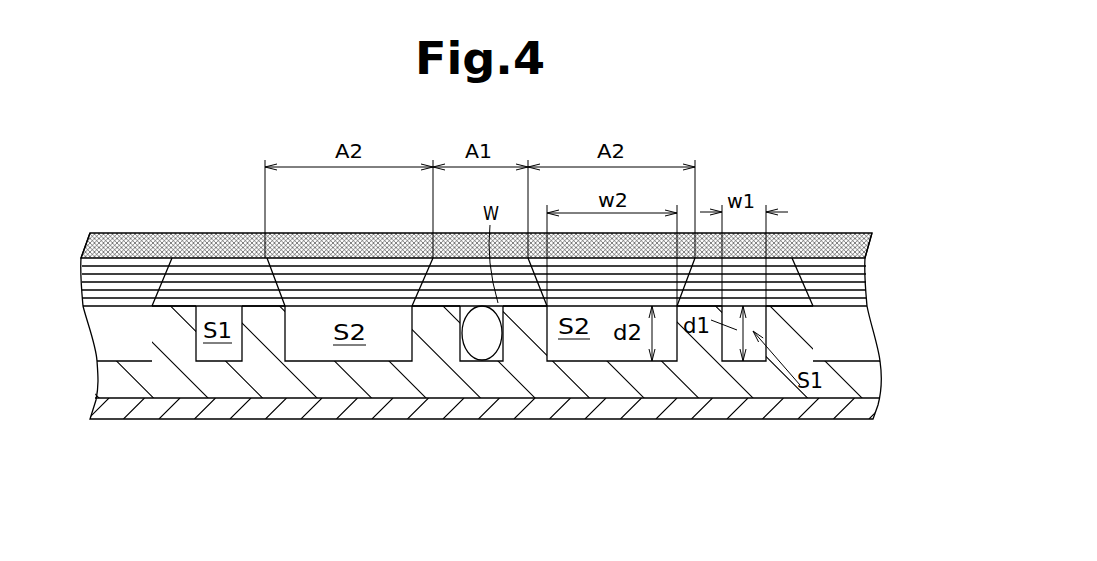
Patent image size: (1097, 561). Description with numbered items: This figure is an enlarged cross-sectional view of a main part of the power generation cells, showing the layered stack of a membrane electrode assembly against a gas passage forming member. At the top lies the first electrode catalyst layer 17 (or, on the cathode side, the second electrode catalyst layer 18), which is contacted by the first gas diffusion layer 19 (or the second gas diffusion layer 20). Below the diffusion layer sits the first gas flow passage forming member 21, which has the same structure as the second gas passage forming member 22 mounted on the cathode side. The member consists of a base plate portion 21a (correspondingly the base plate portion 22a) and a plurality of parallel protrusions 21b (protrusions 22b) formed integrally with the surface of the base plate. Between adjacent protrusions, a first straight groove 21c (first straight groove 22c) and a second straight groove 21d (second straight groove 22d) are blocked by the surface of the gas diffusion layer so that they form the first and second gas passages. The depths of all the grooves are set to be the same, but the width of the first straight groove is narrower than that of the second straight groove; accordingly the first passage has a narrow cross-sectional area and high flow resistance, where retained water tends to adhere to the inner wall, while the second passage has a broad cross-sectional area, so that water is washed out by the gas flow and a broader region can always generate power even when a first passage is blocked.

The first electrode catalyst layer 17 is at (141, 248).
The second electrode catalyst layer 18 is at (476, 212).
The first gas diffusion layer 19 is at (823, 268).
The second gas diffusion layer 20 is at (485, 247).
The first gas flow passage forming member 21 is at (547, 430).
The second gas passage forming member 22 is at (459, 362).
The base plate portion 21a is at (317, 412).
The base plate portion 22a is at (489, 444).
The protrusions 21b is at (805, 322).
The protrusions 22b is at (500, 398).
The first straight groove 21c is at (756, 358).
The first straight groove 22c is at (502, 362).
The second straight groove 21d is at (590, 343).
The second straight groove 22d is at (500, 432).